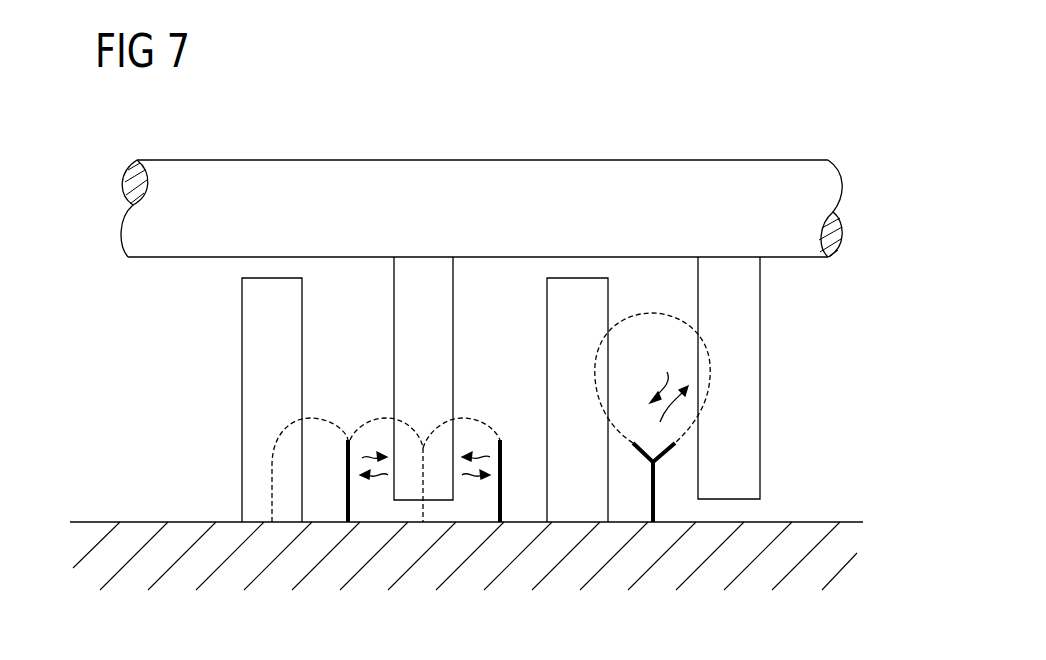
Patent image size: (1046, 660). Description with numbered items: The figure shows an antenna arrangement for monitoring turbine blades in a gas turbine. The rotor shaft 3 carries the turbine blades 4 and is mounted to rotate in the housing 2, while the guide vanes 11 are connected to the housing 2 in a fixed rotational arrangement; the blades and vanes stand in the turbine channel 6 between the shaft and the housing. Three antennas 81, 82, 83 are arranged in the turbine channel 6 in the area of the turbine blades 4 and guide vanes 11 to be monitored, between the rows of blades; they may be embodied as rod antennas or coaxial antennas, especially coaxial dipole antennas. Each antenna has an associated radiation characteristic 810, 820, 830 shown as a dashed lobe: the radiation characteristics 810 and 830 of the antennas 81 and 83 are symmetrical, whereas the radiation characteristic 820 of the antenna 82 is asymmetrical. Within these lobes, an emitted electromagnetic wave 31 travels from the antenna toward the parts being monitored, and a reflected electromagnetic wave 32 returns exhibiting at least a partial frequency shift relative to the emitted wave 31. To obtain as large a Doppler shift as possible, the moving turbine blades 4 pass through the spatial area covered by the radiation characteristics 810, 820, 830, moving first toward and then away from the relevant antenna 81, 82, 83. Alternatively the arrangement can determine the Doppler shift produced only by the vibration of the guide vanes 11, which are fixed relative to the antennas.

The housing 2 is at (133, 543).
The rotor shaft 3 is at (478, 178).
The turbine blades 4 is at (415, 300).
The turbine channel 6 is at (130, 390).
The guide vanes 11 is at (255, 318).
The emitted electromagnetic wave 31 is at (477, 450).
The reflected electromagnetic wave 32 is at (377, 473).
The antenna 81 is at (335, 495).
The antenna 82 is at (505, 495).
The antenna 83 is at (655, 492).
The radiation characteristic 810 is at (362, 422).
The radiation characteristic 820 is at (482, 420).
The radiation characteristic 830 is at (652, 313).